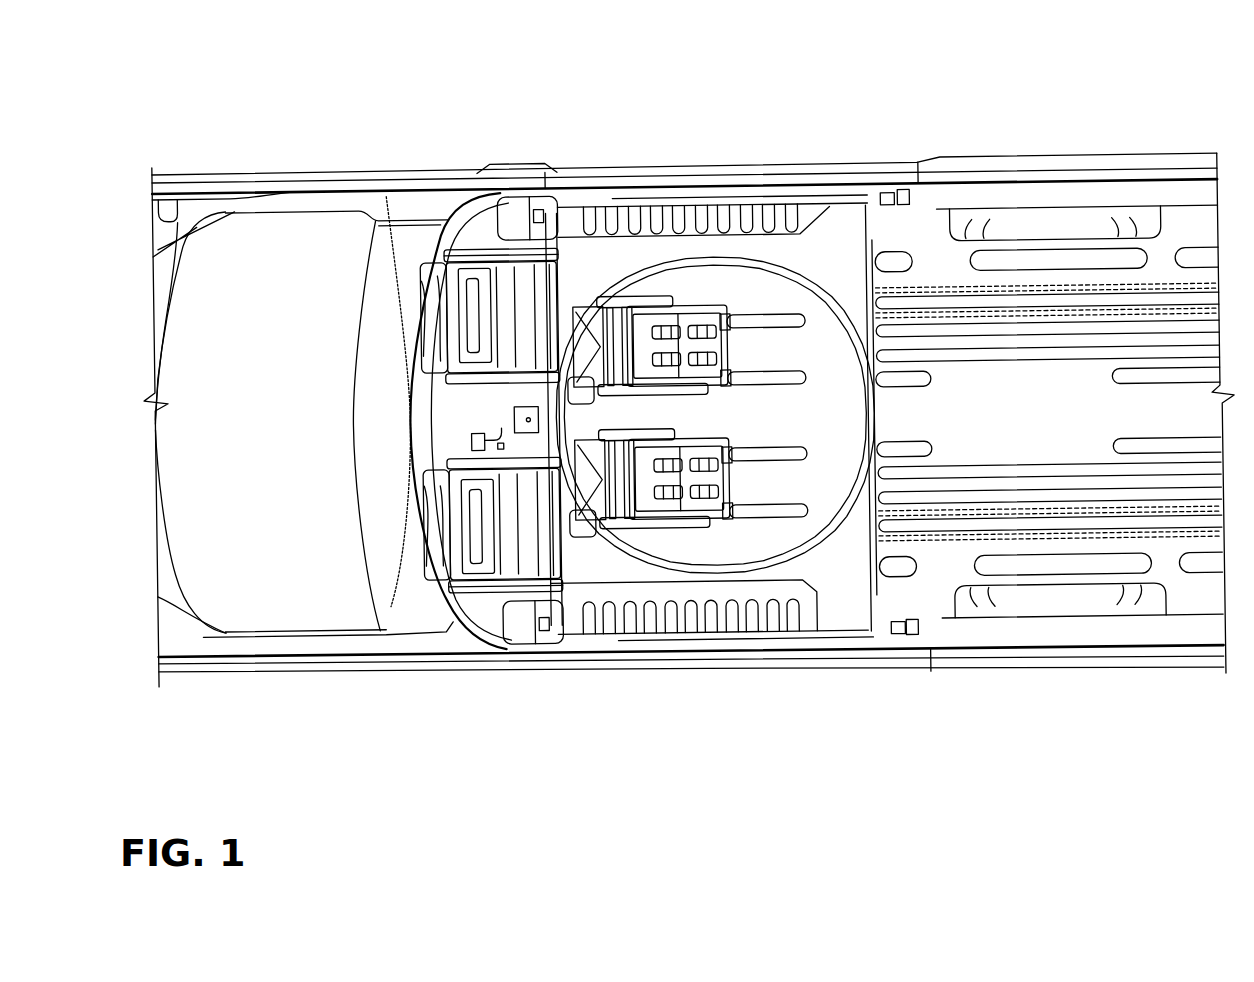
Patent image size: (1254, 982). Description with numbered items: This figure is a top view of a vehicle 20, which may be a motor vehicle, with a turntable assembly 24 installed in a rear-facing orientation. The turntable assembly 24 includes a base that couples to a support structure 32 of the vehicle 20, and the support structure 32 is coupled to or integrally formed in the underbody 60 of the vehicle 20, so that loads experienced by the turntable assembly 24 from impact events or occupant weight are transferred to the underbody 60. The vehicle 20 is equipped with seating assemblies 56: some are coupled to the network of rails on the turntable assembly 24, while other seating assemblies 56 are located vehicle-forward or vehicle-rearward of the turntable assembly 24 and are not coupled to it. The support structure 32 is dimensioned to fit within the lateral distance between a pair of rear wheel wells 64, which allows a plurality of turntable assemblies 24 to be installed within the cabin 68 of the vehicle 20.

The vehicle 20 is at (240, 137).
The turntable assembly 24 is at (762, 297).
The support structure 32 is at (838, 278).
The seating assemblies 56 is at (440, 273).
The underbody 60 is at (833, 601).
The rear wheel wells 64 is at (1041, 231).
The cabin 68 is at (933, 253).